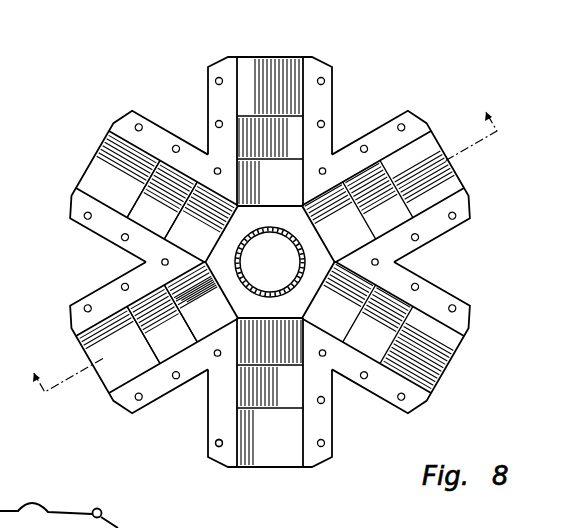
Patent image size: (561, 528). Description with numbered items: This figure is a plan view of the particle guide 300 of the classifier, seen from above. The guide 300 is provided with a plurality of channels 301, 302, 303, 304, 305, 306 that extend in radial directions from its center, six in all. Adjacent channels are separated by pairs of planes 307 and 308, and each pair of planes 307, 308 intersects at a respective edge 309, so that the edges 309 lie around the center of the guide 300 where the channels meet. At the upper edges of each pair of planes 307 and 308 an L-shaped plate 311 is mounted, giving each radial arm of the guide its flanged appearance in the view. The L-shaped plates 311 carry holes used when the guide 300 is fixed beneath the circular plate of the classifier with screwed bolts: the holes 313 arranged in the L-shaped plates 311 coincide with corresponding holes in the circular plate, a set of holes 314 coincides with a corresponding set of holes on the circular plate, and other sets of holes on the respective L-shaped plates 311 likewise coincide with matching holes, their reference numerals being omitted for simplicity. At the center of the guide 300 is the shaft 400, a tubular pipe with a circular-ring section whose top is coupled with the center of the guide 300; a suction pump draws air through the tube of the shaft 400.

The guide 300 is at (401, 80).
The channel 301 is at (291, 452).
The channel 302 is at (103, 368).
The channel 303 is at (100, 160).
The channel 304 is at (265, 70).
The channel 305 is at (458, 178).
The radial arm 306 is at (442, 356).
The plane 307 is at (178, 296).
The plane 308 is at (178, 261).
The edge 309 is at (240, 316).
The L-shaped plate 311 is at (212, 108).
The holes 313 is at (232, 159).
The set of holes 314 is at (173, 373).
The shaft 400 is at (247, 258).